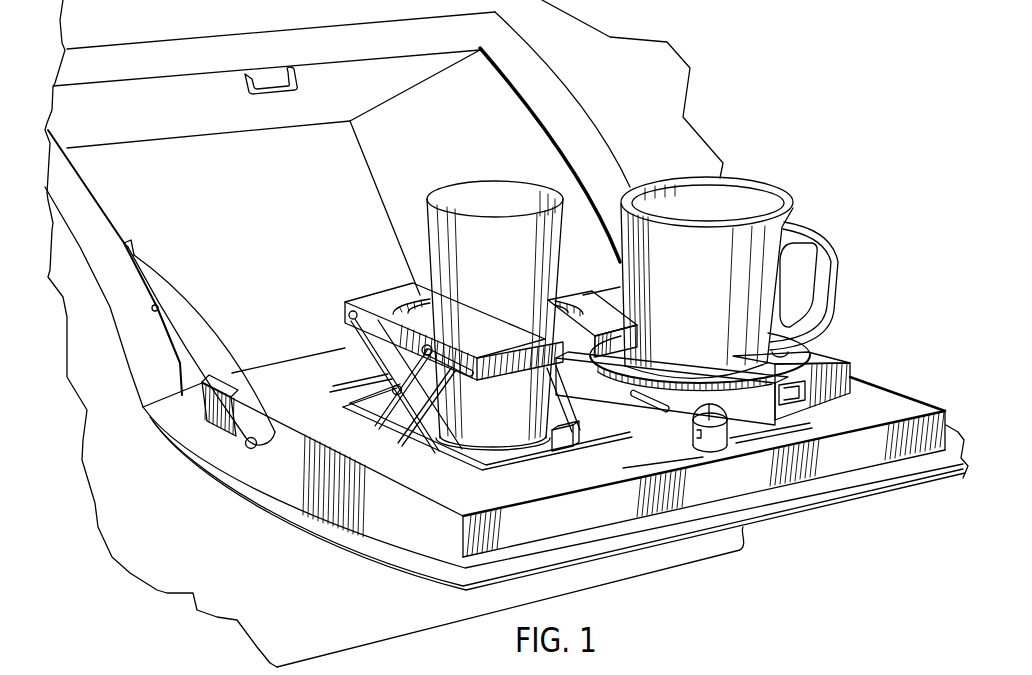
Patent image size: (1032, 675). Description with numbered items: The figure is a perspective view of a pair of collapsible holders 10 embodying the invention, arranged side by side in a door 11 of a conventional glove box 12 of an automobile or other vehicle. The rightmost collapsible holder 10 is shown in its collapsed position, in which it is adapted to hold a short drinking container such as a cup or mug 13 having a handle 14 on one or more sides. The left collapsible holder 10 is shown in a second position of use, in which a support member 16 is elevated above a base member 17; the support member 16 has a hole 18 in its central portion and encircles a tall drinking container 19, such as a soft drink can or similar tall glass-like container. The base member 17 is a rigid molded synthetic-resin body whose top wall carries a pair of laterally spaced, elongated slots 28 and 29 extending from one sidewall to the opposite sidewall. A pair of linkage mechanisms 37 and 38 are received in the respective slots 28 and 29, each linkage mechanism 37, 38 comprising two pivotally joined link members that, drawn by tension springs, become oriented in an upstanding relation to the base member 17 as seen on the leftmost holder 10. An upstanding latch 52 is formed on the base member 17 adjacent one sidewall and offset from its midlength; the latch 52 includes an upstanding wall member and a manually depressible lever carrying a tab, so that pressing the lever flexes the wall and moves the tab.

The collapsible holder 10 is at (575, 367).
The door 11 is at (380, 572).
The glove box 12 is at (540, 92).
The cup or mug 13 is at (745, 254).
The handle 14 is at (830, 226).
The support member 16 is at (365, 292).
The base member 17 is at (517, 462).
The hole 18 is at (415, 295).
The tall drinking container 19 is at (445, 182).
The slot 28 is at (615, 425).
The slot 29 is at (473, 467).
The linkage mechanism 37 is at (568, 387).
The linkage mechanism 38 is at (373, 418).
The latch 52 is at (570, 442).